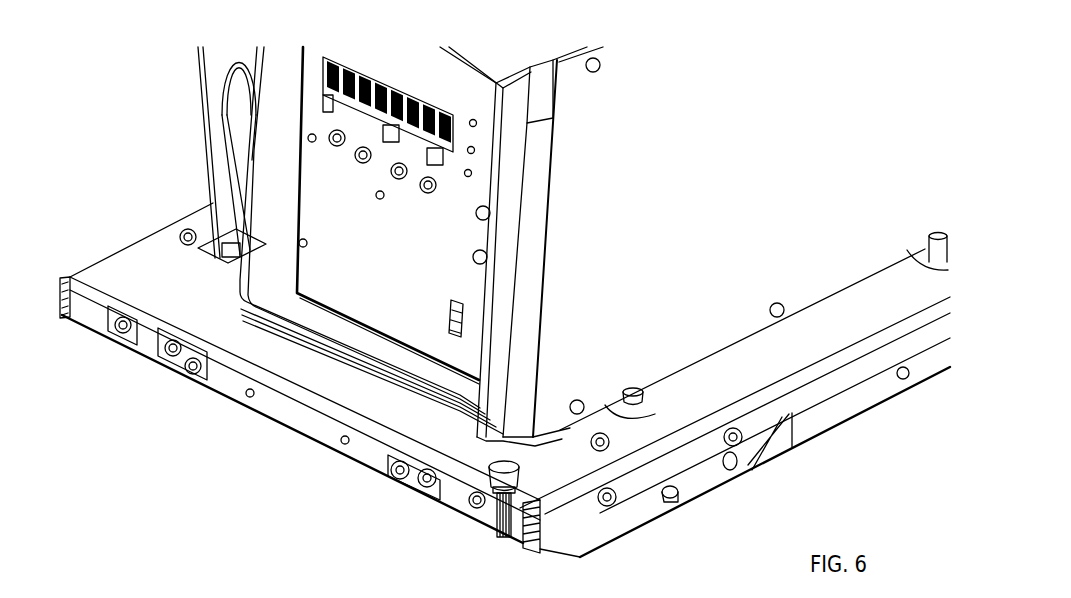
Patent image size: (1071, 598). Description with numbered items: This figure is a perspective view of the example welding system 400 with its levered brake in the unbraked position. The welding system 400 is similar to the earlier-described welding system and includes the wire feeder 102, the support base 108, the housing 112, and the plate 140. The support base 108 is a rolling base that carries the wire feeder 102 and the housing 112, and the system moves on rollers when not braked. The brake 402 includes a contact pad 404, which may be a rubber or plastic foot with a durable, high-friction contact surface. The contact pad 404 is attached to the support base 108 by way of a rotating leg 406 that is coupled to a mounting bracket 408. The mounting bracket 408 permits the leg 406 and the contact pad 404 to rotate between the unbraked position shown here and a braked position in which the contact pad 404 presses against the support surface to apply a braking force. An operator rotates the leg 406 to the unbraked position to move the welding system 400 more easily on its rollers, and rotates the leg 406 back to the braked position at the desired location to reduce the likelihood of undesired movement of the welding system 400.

The welding system 400 is at (86, 45).
The wire feeder 102 is at (240, 39).
The support base 108 is at (120, 247).
The plate 140 is at (160, 253).
The housing 112 is at (723, 335).
The brake 402 is at (468, 442).
The contact pad 404 is at (509, 463).
The rotating leg 406 is at (497, 537).
The mounting bracket 408 is at (518, 539).